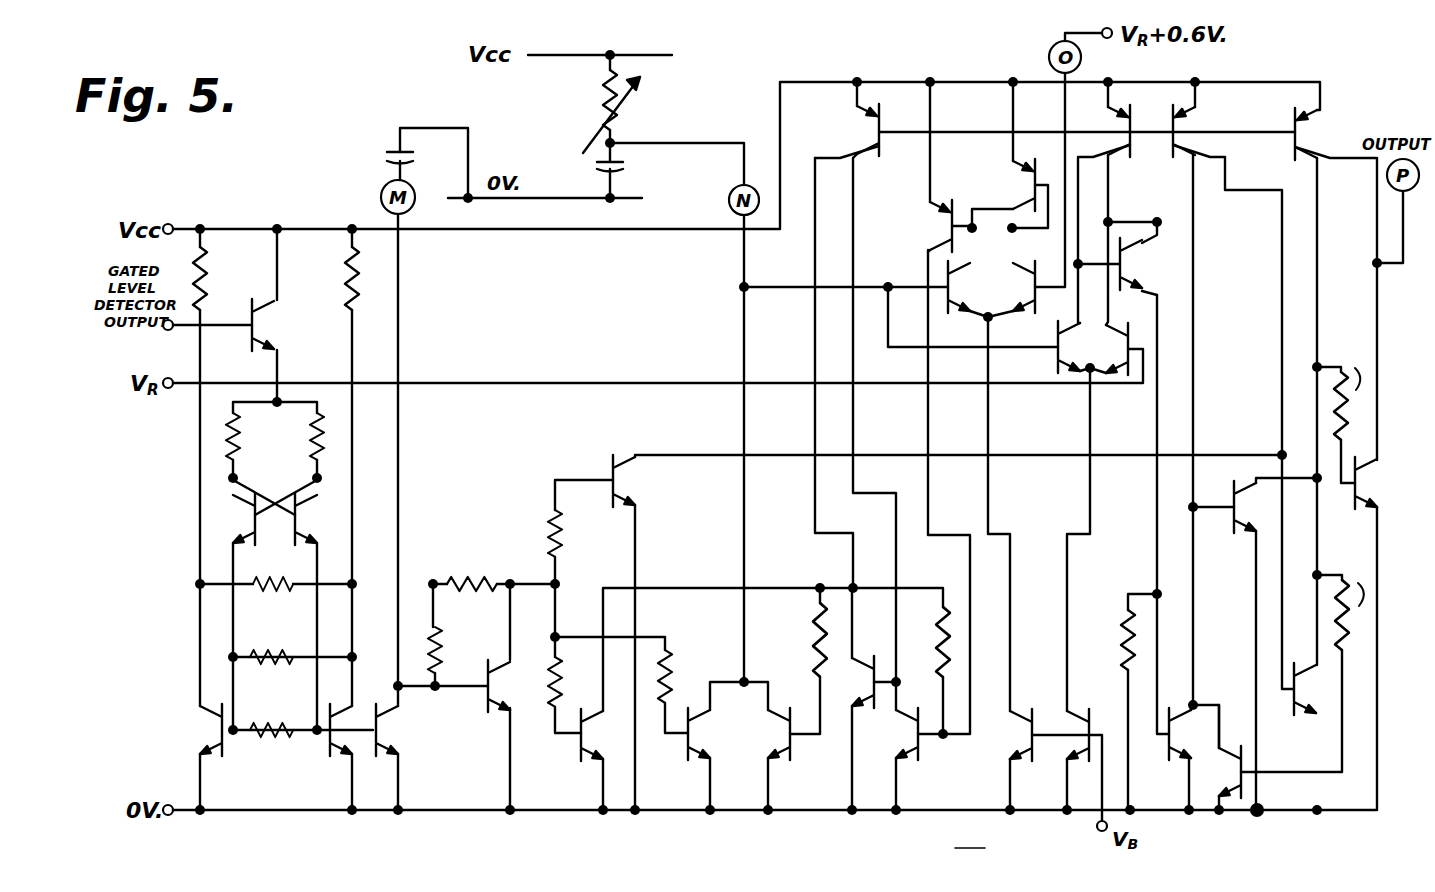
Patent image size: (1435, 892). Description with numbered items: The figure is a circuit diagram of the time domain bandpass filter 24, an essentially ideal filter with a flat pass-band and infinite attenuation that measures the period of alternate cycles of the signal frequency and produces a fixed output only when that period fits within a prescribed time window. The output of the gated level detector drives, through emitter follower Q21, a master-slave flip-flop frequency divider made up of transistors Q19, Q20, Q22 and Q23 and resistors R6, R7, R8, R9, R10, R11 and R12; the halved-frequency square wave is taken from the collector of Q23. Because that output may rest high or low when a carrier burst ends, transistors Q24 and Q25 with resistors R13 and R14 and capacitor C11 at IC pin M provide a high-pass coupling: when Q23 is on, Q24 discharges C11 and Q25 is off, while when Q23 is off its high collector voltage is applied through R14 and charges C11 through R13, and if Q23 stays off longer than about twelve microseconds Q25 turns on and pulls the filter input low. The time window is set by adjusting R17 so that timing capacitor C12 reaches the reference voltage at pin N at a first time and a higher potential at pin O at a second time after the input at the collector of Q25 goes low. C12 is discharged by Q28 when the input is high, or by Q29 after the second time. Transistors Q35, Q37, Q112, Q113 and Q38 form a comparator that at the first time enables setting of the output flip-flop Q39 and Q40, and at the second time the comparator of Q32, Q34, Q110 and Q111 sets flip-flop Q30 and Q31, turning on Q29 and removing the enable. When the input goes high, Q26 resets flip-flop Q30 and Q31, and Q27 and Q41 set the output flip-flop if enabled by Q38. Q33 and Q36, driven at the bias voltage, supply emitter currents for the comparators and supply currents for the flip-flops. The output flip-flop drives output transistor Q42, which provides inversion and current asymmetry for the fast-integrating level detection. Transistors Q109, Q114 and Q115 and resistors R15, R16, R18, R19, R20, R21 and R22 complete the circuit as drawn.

The time domain bandpass filter 24 is at (970, 837).
The transistor Q19 is at (197, 730).
The transistor Q20 is at (237, 519).
The emitter follower Q21 is at (275, 325).
The transistor Q22 is at (321, 519).
The flip-flop output transistor Q23 is at (326, 745).
The transistor Q24 is at (400, 730).
The transistor Q25 is at (513, 686).
The transistor Q26 is at (607, 735).
The transistor Q27 is at (642, 481).
The transistor Q28 is at (712, 734).
The transistor Q29 is at (773, 734).
The flip-flop transistor Q30 is at (855, 682).
The flip-flop transistor Q31 is at (899, 734).
The comparator transistor Q32 is at (955, 302).
The current source transistor Q33 is at (1011, 735).
The comparator transistor Q34 is at (1011, 287).
The comparator transistor Q35 is at (1041, 353).
The current source transistor Q36 is at (1064, 735).
The comparator transistor Q37 is at (1129, 339).
The enable transistor Q38 is at (1194, 734).
The output flip-flop transistor Q39 is at (1219, 772).
The output flip-flop transistor Q40 is at (1238, 523).
The transistor Q41 is at (1319, 689).
The output transistor Q42 is at (1351, 496).
The transistor Q109 is at (851, 120).
The comparator transistor Q110 is at (933, 167).
The comparator transistor Q111 is at (1004, 146).
The comparator transistor Q112 is at (1099, 119).
The comparator transistor Q113 is at (1154, 264).
The transistor Q114 is at (1219, 119).
The transistor Q115 is at (1122, 134).
The resistor R6 is at (218, 278).
The resistor R7 is at (251, 440).
The resistor R8 is at (276, 598).
The resistor R9 is at (269, 672).
The resistor R10 is at (266, 746).
The resistor R11 is at (299, 440).
The resistor R12 is at (325, 406).
The resistor R13 is at (460, 635).
The resistor R14 is at (494, 569).
The resistor R15 is at (581, 532).
The resistor R16 is at (580, 658).
The adjustable resistor R17 is at (639, 394).
The resistor R18 is at (798, 661).
The resistor R19 is at (925, 642).
The resistor R20 is at (1117, 702).
The resistor R21 is at (1345, 412).
The resistor R22 is at (1307, 662).
The capacitor C11 is at (379, 163).
The timing capacitor C12 is at (636, 170).